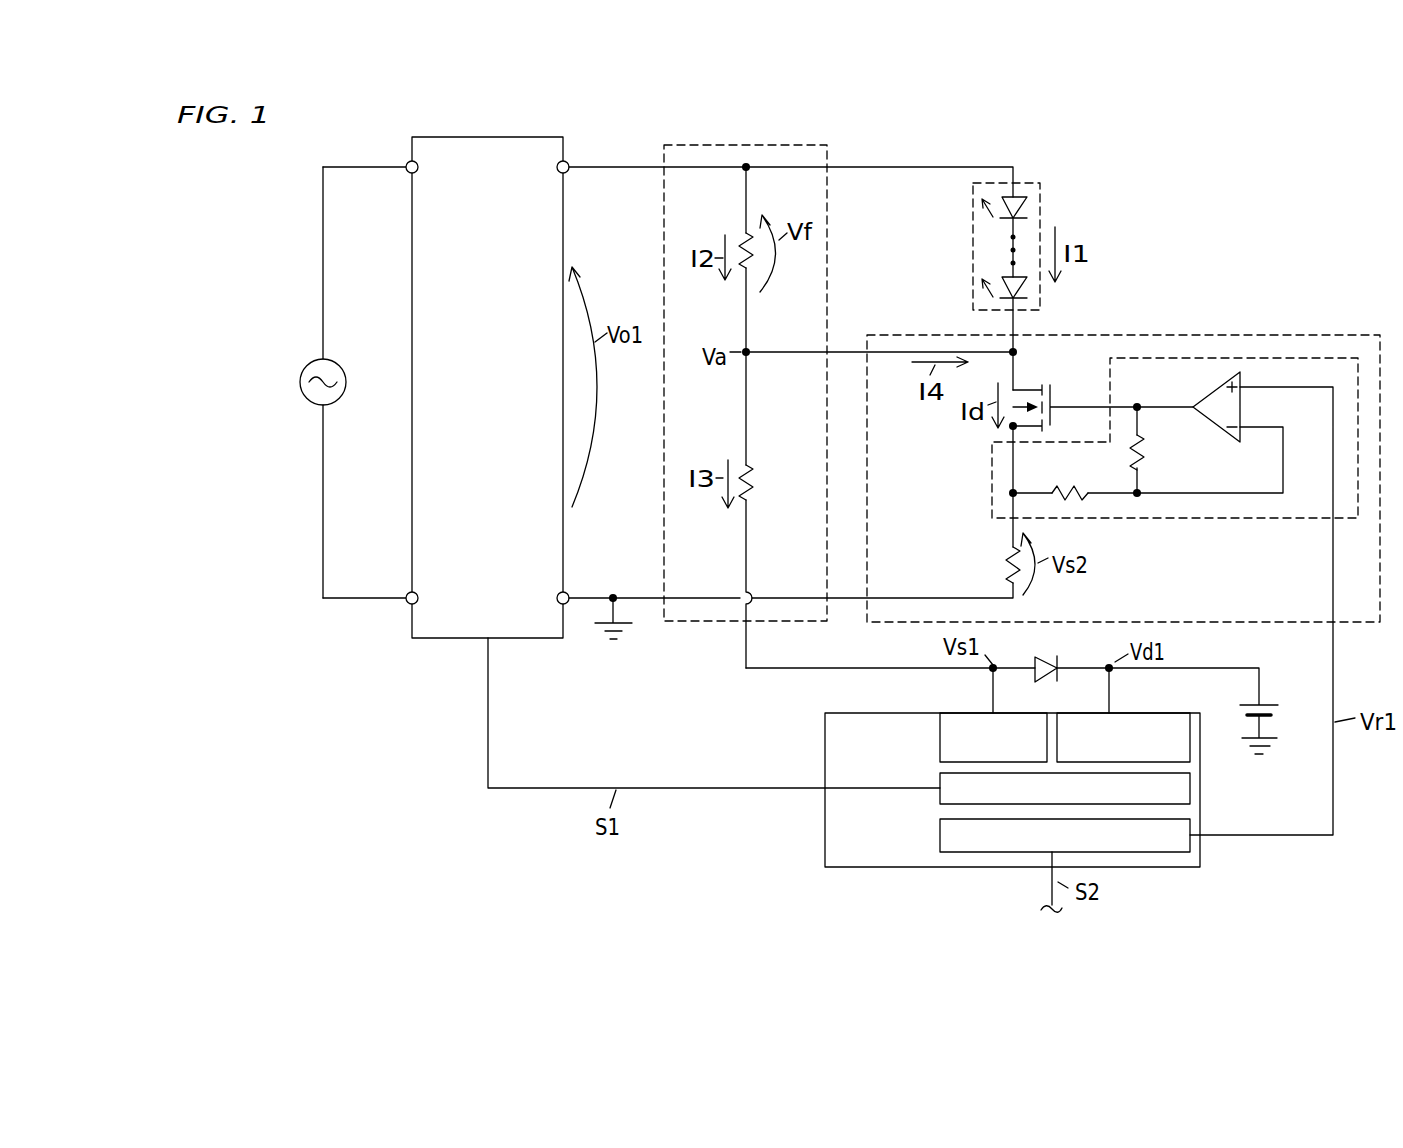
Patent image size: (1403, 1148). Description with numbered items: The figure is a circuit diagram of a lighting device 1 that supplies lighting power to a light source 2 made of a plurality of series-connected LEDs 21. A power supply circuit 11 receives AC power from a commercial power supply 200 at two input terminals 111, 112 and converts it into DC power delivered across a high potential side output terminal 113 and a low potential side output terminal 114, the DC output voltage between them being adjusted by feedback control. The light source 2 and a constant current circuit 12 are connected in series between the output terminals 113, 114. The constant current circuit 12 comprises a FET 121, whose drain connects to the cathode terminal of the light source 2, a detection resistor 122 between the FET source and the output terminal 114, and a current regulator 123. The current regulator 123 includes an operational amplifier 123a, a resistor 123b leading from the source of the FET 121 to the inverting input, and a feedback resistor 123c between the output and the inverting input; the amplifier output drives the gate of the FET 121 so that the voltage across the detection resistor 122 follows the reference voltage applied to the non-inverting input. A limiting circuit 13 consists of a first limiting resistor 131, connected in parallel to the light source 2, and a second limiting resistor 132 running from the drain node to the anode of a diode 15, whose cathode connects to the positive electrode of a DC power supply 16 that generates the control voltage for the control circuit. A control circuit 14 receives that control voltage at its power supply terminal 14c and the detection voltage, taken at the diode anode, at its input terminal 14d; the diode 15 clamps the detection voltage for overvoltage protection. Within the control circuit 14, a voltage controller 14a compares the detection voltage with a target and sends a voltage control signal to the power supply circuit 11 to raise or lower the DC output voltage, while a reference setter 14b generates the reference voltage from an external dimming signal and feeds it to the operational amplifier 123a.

The lighting device 1 is at (876, 138).
The light source 2 is at (1041, 178).
The LED 21 is at (1022, 208).
The power supply circuit 11 is at (472, 165).
The input terminal 111 is at (407, 162).
The input terminal 112 is at (407, 603).
The output terminal 113 is at (571, 162).
The output terminal 114 is at (573, 590).
The constant current circuit 12 is at (1155, 332).
The FET 121 is at (1049, 387).
The detection resistor 122 is at (1005, 562).
The current regulator 123 is at (1237, 355).
The operational amplifier 123a is at (1213, 402).
The resistor 123b is at (1078, 476).
The resistor 123c is at (1163, 455).
The limiting circuit 13 is at (733, 142).
The first limiting resistor 131 is at (740, 237).
The second limiting resistor 132 is at (757, 478).
The control circuit 14 is at (822, 742).
The voltage controller 14a is at (1183, 787).
The reference setter 14b is at (1183, 845).
The power supply terminal 14c is at (1150, 720).
The input terminal 14d is at (952, 720).
The diode 15 is at (1048, 658).
The DC power supply 16 is at (1267, 697).
The commercial power supply 200 is at (308, 358).